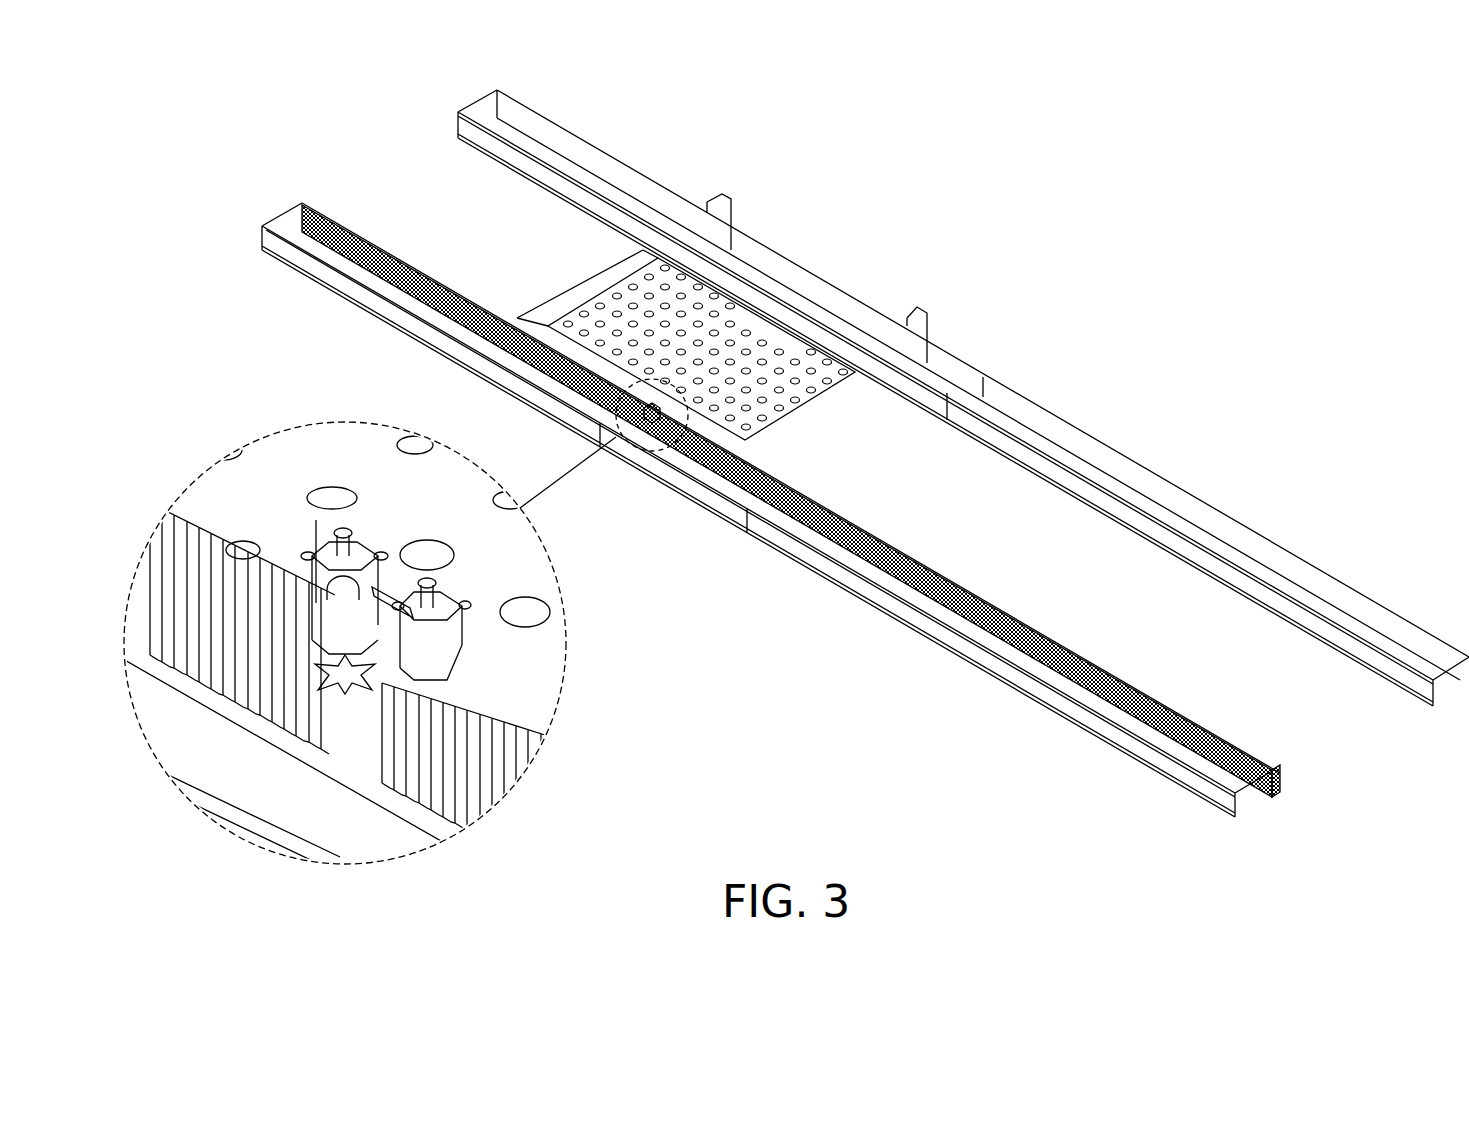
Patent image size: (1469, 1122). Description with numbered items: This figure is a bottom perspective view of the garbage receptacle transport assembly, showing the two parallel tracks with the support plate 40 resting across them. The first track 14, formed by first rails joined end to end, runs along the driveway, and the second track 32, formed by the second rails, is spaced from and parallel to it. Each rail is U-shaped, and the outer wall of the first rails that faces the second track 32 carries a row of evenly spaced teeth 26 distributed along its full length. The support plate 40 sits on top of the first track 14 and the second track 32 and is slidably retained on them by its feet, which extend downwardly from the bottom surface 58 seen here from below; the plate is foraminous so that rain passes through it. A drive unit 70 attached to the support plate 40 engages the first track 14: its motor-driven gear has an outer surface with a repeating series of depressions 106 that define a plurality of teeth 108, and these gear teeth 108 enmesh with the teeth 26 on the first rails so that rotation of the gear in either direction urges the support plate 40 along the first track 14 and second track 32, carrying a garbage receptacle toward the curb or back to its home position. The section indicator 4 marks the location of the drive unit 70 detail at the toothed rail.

The first track 14 is at (1123, 793).
The second track 32 is at (1410, 577).
The teeth 26 is at (1093, 670).
The support plate 40 is at (833, 425).
The bottom surface 58 is at (673, 305).
The drive unit 70 is at (387, 500).
The depressions 106 is at (328, 652).
The teeth 108 is at (455, 828).
The section line 4- 4 is at (334, 591).